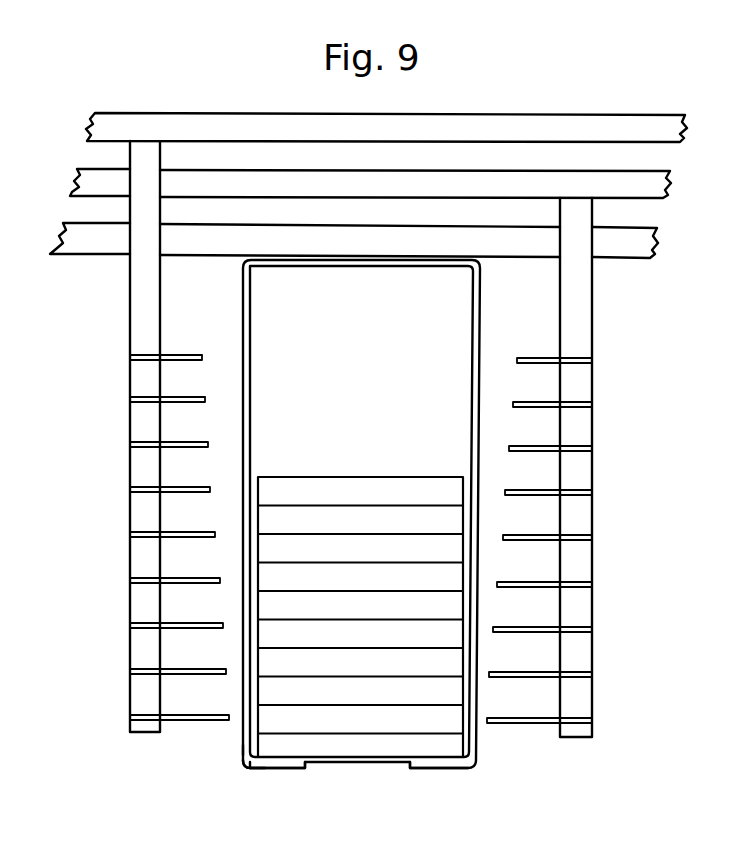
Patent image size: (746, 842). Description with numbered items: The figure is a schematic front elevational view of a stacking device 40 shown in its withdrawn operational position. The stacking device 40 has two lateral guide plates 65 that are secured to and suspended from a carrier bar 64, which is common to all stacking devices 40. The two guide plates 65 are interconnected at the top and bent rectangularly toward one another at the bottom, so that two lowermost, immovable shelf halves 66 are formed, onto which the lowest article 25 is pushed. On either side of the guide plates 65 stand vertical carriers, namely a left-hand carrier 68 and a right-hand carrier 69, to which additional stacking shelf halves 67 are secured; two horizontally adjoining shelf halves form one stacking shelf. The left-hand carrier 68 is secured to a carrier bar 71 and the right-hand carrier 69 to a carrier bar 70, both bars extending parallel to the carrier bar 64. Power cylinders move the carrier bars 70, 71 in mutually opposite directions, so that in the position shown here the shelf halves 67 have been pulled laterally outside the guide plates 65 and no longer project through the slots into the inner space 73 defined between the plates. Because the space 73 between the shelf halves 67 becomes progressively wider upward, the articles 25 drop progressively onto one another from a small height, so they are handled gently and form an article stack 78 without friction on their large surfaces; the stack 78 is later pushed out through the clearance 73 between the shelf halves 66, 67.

The stacking device 40 is at (125, 750).
The carrier bar 71 is at (652, 133).
The carrier bar 70 is at (647, 189).
The carrier bar 64 is at (635, 247).
The left-hand carrier 68 is at (138, 516).
The right-hand carrier 69 is at (575, 523).
The stacking shelf halves 67 is at (160, 447).
The inner space 73 is at (212, 358).
The lateral guide plates 65 is at (247, 586).
The lowermost immovable shelf halves 66 is at (420, 767).
The article 25 is at (287, 720).
The article stack 78 is at (354, 474).